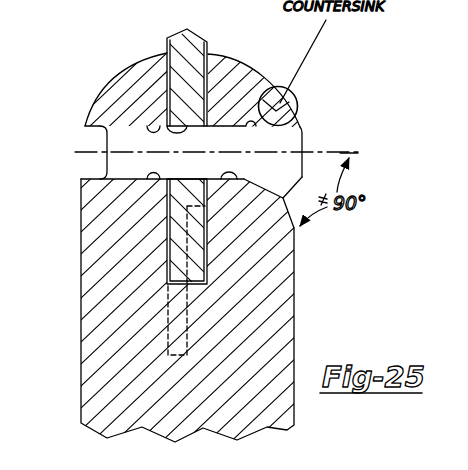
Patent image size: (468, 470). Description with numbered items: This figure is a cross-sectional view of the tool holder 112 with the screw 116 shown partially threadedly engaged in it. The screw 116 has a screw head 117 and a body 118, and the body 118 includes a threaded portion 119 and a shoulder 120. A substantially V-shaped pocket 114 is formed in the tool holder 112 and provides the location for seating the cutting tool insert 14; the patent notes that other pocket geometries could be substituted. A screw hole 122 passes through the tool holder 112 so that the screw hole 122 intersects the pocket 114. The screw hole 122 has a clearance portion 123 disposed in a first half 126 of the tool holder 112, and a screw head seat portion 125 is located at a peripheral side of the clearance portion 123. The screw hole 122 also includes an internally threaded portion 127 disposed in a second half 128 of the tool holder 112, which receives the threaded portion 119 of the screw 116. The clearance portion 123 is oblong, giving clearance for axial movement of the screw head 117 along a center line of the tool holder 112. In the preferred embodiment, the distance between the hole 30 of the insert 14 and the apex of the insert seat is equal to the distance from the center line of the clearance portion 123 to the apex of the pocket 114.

The cutting tool insert 14 is at (183, 44).
The hole 30 is at (162, 125).
The tool holder 112 is at (97, 86).
The V-shaped pocket 114 is at (167, 262).
The screw 116 is at (306, 140).
The screw head 117 is at (257, 163).
The body 118 is at (130, 159).
The threaded portion 119 is at (130, 140).
The shoulder 120 is at (220, 140).
The screw hole 122 is at (203, 137).
The clearance portion 123 is at (232, 178).
The screw head seat portion 125 is at (298, 108).
The first half 126 is at (253, 297).
The internally threaded portion 127 is at (86, 178).
The second half 128 is at (113, 232).